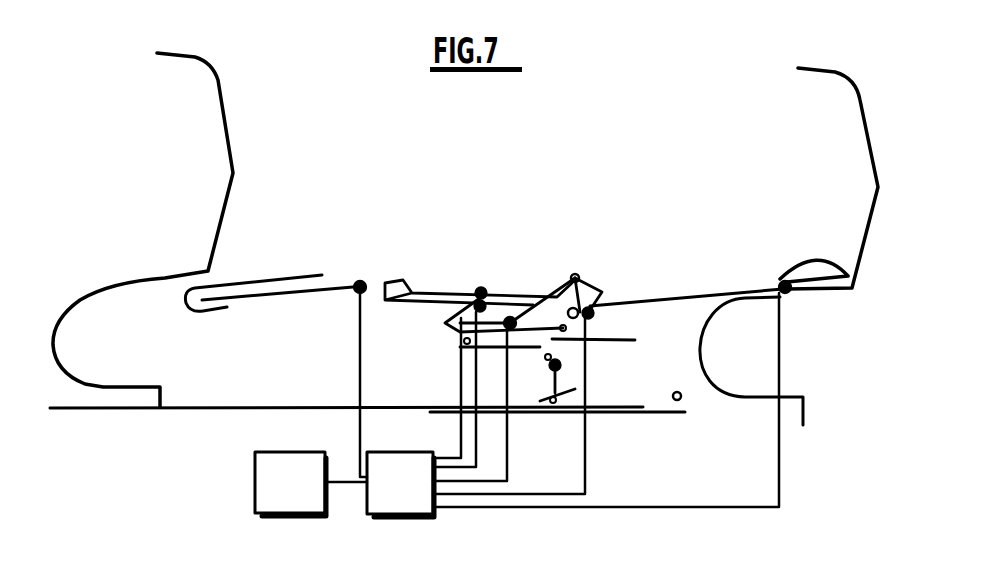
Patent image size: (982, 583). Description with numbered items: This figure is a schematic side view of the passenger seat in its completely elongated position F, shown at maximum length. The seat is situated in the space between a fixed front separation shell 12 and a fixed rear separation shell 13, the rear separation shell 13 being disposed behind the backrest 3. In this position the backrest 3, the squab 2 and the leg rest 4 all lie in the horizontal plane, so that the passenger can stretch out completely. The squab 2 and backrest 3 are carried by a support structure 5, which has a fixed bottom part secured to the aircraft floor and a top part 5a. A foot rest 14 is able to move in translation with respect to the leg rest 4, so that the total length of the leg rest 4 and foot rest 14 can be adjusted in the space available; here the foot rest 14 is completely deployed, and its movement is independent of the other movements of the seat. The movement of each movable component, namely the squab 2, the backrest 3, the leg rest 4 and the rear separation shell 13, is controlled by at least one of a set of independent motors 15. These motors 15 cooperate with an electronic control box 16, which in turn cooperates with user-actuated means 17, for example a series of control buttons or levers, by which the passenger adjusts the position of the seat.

The squab 2 is at (453, 290).
The backrest 3 is at (672, 293).
The leg rest 4 is at (317, 290).
The support structure 5 is at (630, 385).
The top part of support structure 5a is at (532, 300).
The fixed front separation shell 12 is at (225, 136).
The fixed rear separation shell 13 is at (865, 157).
The foot rest 14 is at (280, 285).
The motors 15 is at (365, 281).
The electronic control box 16 is at (418, 499).
The user-actuated adjustment means 17 is at (307, 499).
The completely elongated position F is at (602, 178).